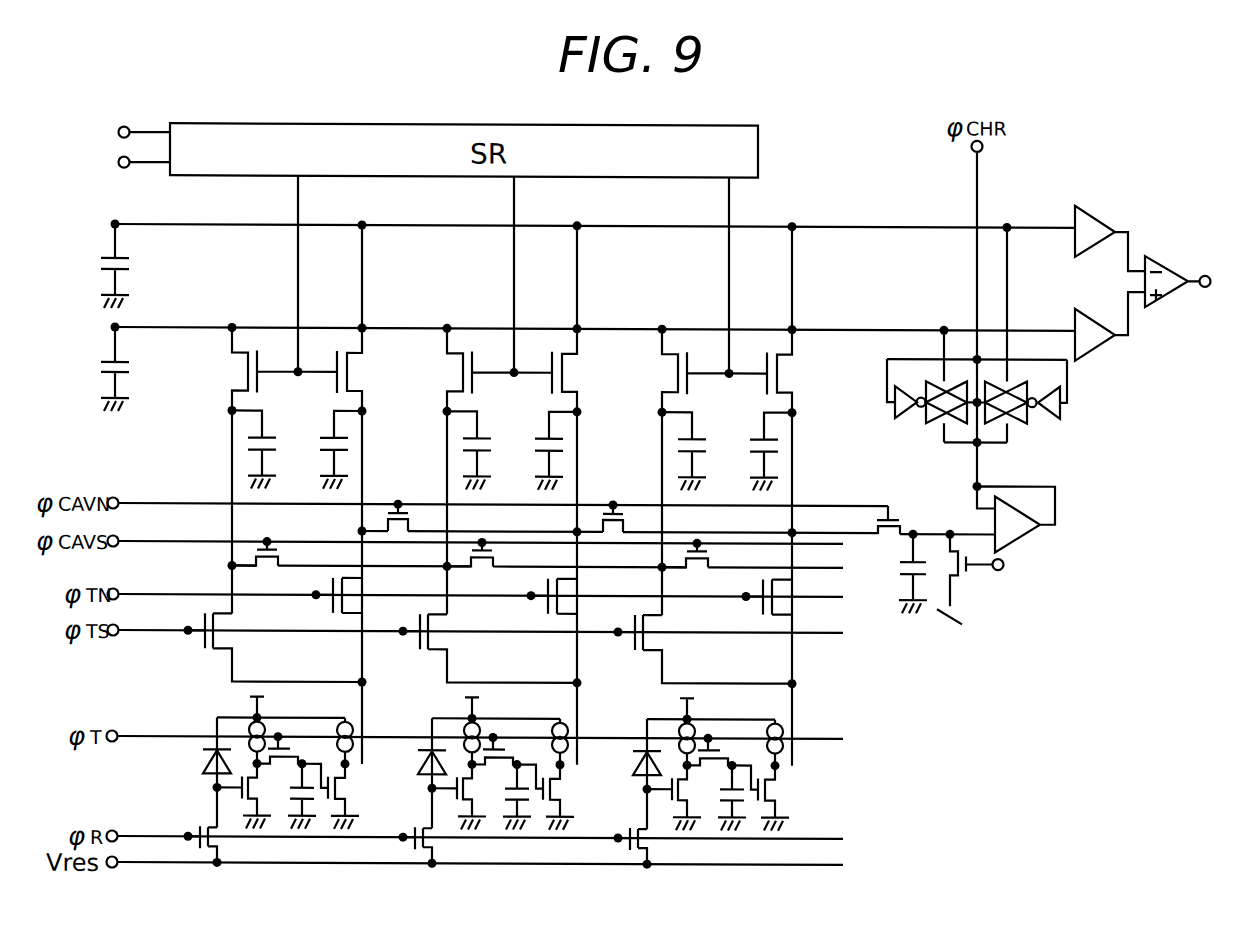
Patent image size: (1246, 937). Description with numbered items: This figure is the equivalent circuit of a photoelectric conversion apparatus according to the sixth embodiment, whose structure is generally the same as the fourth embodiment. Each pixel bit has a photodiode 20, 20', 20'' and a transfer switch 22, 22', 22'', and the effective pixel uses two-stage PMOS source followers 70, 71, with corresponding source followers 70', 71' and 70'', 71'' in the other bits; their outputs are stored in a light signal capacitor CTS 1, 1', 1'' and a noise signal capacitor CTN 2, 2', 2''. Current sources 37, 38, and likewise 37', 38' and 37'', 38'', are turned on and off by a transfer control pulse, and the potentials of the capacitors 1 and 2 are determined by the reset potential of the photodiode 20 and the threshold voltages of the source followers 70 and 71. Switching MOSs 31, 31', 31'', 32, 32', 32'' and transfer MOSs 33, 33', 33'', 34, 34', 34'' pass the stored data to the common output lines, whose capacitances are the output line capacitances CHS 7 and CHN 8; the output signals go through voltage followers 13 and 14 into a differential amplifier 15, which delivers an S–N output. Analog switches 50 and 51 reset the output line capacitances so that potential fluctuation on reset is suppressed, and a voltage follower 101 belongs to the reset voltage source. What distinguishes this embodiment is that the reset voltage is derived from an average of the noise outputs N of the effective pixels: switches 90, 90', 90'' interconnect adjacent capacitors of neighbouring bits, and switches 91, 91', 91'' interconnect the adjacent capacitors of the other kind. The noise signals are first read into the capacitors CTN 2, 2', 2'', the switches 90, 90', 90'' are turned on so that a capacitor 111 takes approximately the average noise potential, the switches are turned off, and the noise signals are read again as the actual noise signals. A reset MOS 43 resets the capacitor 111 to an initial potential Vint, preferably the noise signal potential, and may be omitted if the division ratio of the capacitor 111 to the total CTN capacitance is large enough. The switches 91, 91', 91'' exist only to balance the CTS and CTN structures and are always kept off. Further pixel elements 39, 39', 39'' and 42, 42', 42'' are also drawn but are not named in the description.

The light signal capacitor CTS 1 is at (267, 442).
The noise signal capacitor CTN 2 is at (360, 450).
The light signal capacitor CTS 1' is at (485, 443).
The noise signal capacitor CTN 2' is at (578, 451).
The light signal capacitor CTS 1'' is at (702, 444).
The noise signal capacitor CTN 2'' is at (797, 452).
The output line capacitance CHS 7 is at (132, 364).
The output line capacitance CHN 8 is at (132, 262).
The voltage follower 13 is at (1098, 206).
The voltage follower 14 is at (1100, 350).
The differential amplifier 15 is at (1168, 257).
The photodiode 20 is at (187, 772).
The photodiode 20' is at (414, 773).
The photodiode 20'' is at (629, 774).
The transfer switch 22 is at (280, 729).
The transfer switch 22' is at (495, 729).
The transfer switch 22'' is at (711, 730).
The switching MOS 31 is at (275, 649).
The switching MOS 31' is at (490, 650).
The switching MOS 31'' is at (705, 651).
The switching MOS 32 is at (359, 589).
The switching MOS 32' is at (576, 590).
The switching MOS 32'' is at (793, 591).
The transfer MOS 33 is at (234, 369).
The transfer MOS 33' is at (449, 370).
The transfer MOS 33'' is at (663, 371).
The transfer MOS 34 is at (358, 369).
The transfer MOS 34' is at (576, 370).
The transfer MOS 34'' is at (793, 371).
The current source 37 is at (221, 721).
The current source 37' is at (436, 722).
The current source 37'' is at (650, 723).
The current source 38 is at (335, 723).
The current source 38' is at (550, 724).
The current source 38'' is at (767, 725).
The capacitor 39 is at (308, 834).
The capacitor 39' is at (525, 835).
The capacitor 39'' is at (742, 835).
The reset transistor 42 is at (215, 864).
The reset transistor 42' is at (432, 865).
The reset transistor 42'' is at (649, 866).
The reset MOS 43 is at (965, 576).
The analog switch 50 is at (937, 422).
The analog switch 51 is at (1012, 422).
The PMOS source follower 70 is at (248, 833).
The PMOS source follower 70' is at (466, 834).
The PMOS source follower 70'' is at (683, 835).
The PMOS source follower 71 is at (339, 831).
The PMOS source follower 71' is at (556, 832).
The PMOS source follower 71'' is at (773, 833).
The switch 90 is at (357, 518).
The switch 90' is at (618, 499).
The switch 90'' is at (864, 500).
The switch 91 is at (232, 563).
The switch 91' is at (477, 584).
The switch 91'' is at (694, 585).
The voltage follower 101 is at (1027, 540).
The capacitor 111 is at (893, 567).